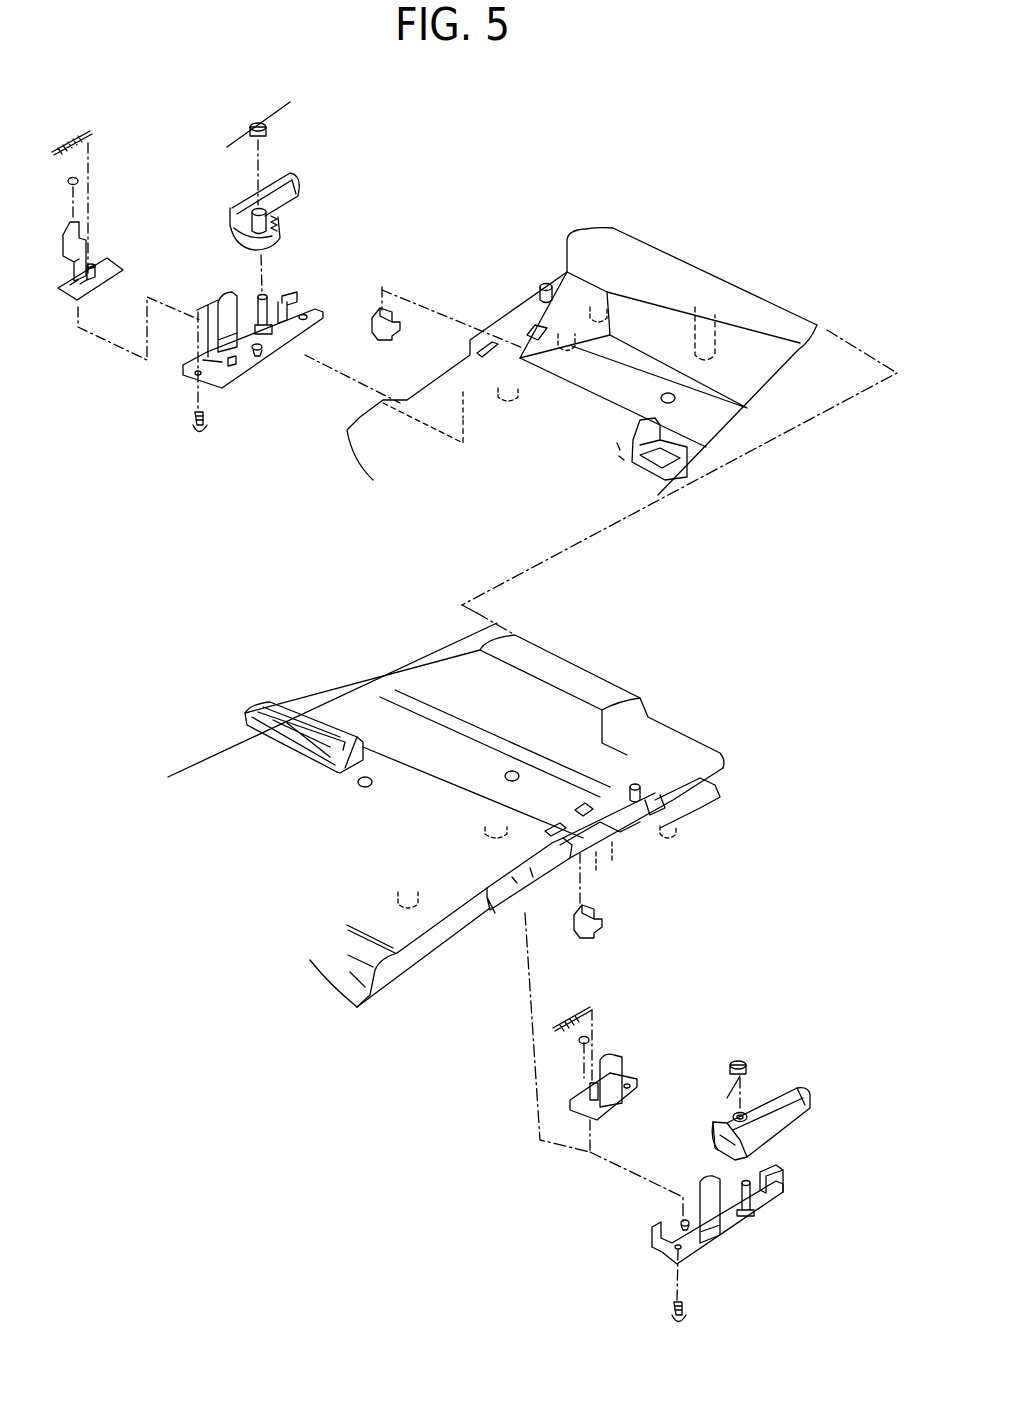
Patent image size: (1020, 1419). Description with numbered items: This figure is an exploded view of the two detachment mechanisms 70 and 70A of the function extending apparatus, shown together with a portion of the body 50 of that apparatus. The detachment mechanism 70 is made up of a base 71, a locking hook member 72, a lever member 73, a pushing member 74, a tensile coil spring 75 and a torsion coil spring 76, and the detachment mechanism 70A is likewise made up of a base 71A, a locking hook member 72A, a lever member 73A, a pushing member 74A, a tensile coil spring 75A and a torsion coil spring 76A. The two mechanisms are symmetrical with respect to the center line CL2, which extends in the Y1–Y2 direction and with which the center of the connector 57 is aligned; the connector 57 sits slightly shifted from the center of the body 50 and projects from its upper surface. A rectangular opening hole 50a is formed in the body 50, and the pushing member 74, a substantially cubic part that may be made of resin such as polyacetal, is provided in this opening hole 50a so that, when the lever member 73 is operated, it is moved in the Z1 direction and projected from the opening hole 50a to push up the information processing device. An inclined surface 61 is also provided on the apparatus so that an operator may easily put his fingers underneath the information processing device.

The body 50 is at (648, 253).
The opening hole 50a is at (532, 327).
The connector 57 is at (310, 732).
The inclined surface 61 is at (508, 915).
The detachment mechanism 70 is at (406, 158).
The detachment mechanism 70A is at (783, 910).
The base 71 is at (261, 368).
The base 71A is at (752, 1229).
The locking hook member 72 is at (127, 263).
The locking hook member 72A is at (621, 1068).
The lever member 73 is at (291, 214).
The lever member 73A is at (792, 1137).
The pushing member 74 is at (397, 314).
The pushing member 74A is at (598, 907).
The tensile coil spring 75 is at (67, 146).
The tensile coil spring 75A is at (584, 1003).
The torsion coil spring 76 is at (253, 124).
The torsion coil spring 76A is at (748, 1070).
The center line CL2 is at (210, 760).